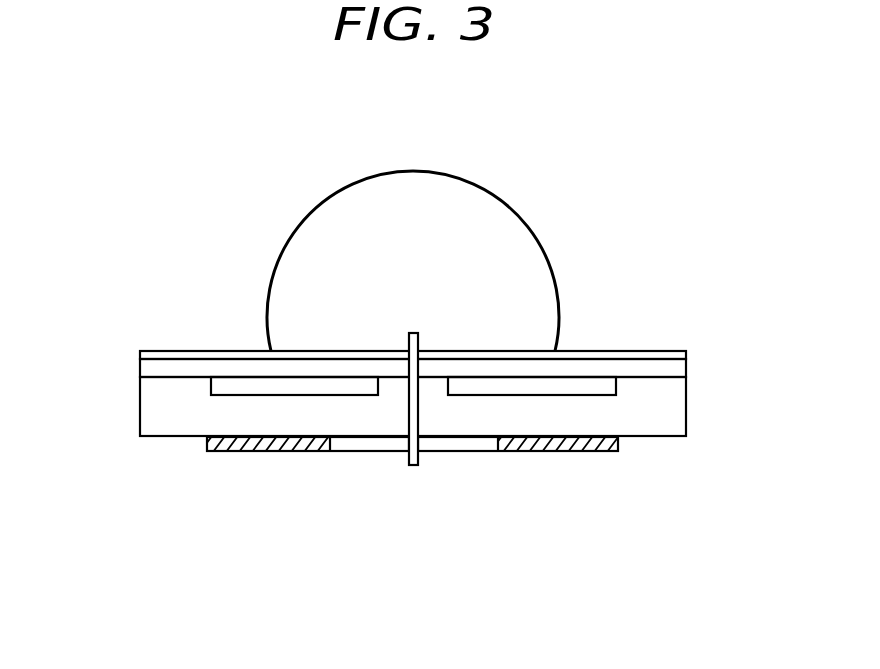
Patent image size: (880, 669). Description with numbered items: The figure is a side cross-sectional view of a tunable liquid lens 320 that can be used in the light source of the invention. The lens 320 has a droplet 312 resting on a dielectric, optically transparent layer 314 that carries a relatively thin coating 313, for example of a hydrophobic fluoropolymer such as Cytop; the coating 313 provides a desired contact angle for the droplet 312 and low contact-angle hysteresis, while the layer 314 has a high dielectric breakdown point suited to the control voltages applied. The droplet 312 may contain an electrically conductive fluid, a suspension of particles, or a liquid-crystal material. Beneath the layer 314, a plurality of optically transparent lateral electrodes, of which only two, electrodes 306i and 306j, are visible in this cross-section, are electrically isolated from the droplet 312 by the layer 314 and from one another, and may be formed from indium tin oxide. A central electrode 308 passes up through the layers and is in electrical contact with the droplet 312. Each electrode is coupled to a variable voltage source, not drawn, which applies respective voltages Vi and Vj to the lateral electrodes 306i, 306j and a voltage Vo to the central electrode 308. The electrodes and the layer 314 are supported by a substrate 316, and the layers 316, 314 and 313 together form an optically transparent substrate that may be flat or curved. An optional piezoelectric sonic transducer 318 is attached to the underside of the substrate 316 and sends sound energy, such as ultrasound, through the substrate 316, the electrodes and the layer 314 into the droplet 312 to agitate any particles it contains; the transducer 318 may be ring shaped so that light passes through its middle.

The tunable liquid lens 320 is at (433, 100).
The droplet 312 is at (502, 222).
The coating 313 is at (147, 353).
The dielectric, optically transparent layer 314 is at (148, 368).
The substrate 316 is at (148, 413).
The lateral electrode 306i is at (360, 385).
The lateral electrode 306j is at (510, 385).
The central electrode 308 is at (415, 438).
The piezoelectric sonic transducer 318 is at (622, 443).
The voltage Vi is at (242, 385).
The voltage Vj is at (585, 385).
The voltage Vo is at (412, 468).